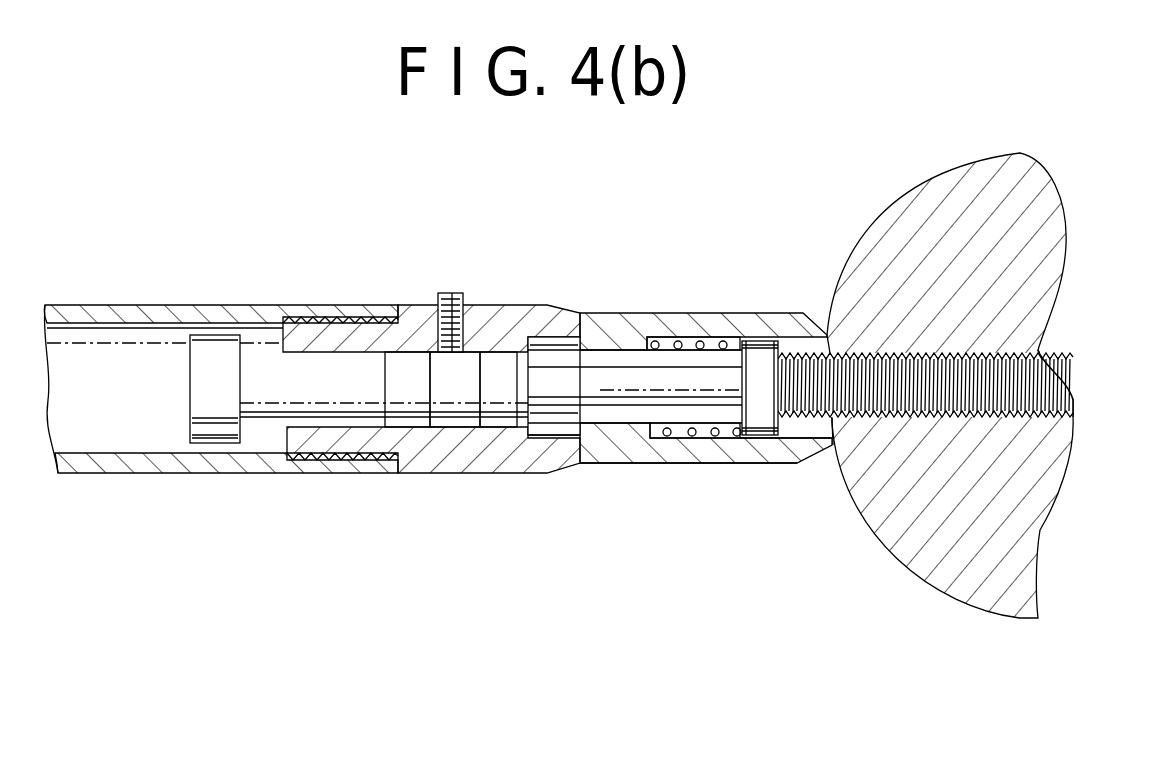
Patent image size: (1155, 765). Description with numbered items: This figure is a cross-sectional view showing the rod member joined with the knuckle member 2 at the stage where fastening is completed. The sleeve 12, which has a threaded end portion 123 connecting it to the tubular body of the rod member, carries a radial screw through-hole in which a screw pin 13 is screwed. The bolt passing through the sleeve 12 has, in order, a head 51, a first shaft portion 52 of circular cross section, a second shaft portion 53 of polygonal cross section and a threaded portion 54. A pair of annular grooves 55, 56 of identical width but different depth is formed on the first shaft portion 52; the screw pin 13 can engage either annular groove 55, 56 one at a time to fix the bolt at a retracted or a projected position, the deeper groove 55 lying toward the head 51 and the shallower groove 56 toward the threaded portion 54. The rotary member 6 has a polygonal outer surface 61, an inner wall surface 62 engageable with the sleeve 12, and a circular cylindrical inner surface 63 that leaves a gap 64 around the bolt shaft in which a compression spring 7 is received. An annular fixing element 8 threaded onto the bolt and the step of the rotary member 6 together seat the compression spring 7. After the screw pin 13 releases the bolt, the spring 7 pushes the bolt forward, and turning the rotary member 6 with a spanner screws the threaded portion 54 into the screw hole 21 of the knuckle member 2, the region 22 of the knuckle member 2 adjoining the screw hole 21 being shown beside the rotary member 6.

The knuckle member 2 is at (930, 205).
The rotary member 6 is at (660, 453).
The compression spring 7 is at (680, 335).
The annular fixing element 8 is at (767, 352).
The sleeve 12 is at (515, 315).
The screw pin 13 is at (443, 293).
The screw hole 21 is at (1028, 390).
The shoulder of body 22 is at (827, 432).
The head 51 is at (205, 385).
The first shaft portion 52 is at (298, 395).
The second shaft portion 53 is at (635, 386).
The threaded portion 54 is at (775, 463).
The annular groove 55 is at (388, 397).
The annular groove 56 is at (480, 397).
The outer surface 61 is at (632, 463).
The inner wall surface 62 is at (612, 420).
The inner surface 63 is at (705, 342).
The gap 64 is at (702, 436).
The threaded end portion 123 is at (335, 303).